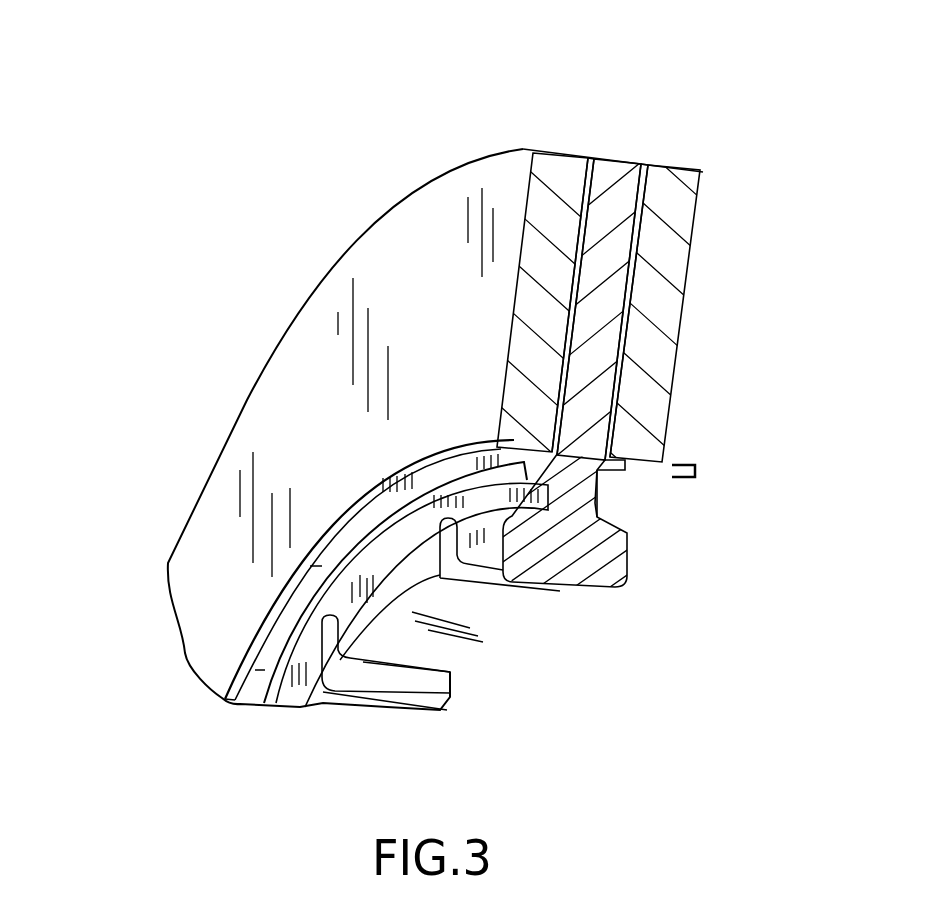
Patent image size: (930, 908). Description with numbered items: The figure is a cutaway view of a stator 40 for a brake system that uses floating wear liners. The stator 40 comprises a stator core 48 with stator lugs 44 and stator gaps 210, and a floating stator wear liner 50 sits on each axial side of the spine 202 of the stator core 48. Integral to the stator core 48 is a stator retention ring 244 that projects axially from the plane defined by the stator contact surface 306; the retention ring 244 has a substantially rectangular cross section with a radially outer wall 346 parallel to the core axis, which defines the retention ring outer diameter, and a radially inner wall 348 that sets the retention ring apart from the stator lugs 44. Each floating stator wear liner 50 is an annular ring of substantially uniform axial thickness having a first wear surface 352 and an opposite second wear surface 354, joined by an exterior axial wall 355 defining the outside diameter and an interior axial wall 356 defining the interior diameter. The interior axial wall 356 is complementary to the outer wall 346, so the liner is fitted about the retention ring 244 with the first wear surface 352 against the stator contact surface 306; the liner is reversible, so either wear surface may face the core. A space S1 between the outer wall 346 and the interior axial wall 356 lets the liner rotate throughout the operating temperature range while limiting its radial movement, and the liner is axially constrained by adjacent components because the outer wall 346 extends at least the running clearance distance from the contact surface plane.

The stator 40 is at (182, 148).
The stator lugs 44 is at (480, 555).
The stator core 48 is at (565, 545).
The floating stator wear liner 50 is at (537, 312).
The spine 202 is at (590, 388).
The stator gaps 210 is at (478, 691).
The stator retention ring 244 is at (538, 470).
The stator contact surface 306 is at (593, 203).
The radially outer wall 346 is at (603, 462).
The radially inner wall 348 is at (257, 688).
The first wear surface 352 is at (580, 258).
The second wear surface 354 is at (294, 432).
The exterior axial wall 355 is at (562, 153).
The interior axial wall 356 is at (345, 497).
The space S1 is at (700, 474).